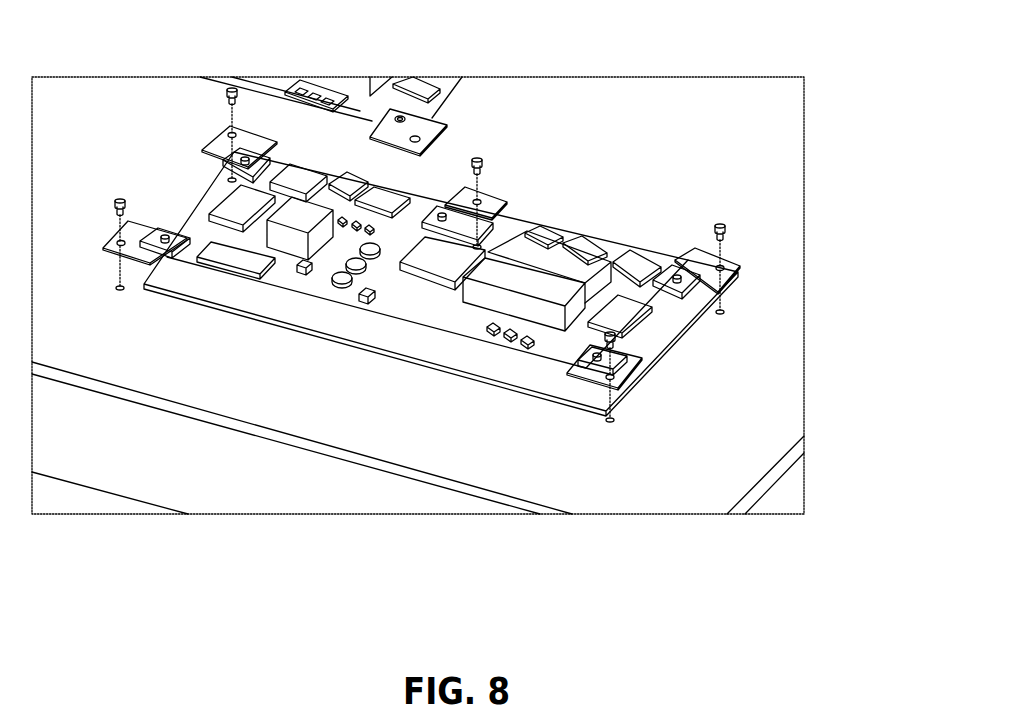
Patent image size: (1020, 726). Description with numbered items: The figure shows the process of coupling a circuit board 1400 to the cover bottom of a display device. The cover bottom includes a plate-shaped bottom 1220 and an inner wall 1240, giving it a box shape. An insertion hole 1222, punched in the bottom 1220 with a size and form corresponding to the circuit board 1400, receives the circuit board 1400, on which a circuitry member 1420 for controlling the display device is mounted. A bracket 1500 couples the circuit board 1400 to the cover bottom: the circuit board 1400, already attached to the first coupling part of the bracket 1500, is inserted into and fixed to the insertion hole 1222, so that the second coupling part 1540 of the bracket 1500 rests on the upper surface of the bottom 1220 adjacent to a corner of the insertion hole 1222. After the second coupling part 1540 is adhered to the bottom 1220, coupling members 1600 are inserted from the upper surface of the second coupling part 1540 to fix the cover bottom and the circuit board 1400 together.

The second coupling part 1540 is at (600, 125).
The coupling member 1600 is at (727, 237).
The bracket 1500 is at (720, 278).
The circuit board 1400 is at (511, 362).
The circuitry member 1420 is at (622, 317).
The insertion hole 1222 is at (538, 367).
The bottom 1220 is at (657, 463).
The inner wall 1240 is at (275, 480).